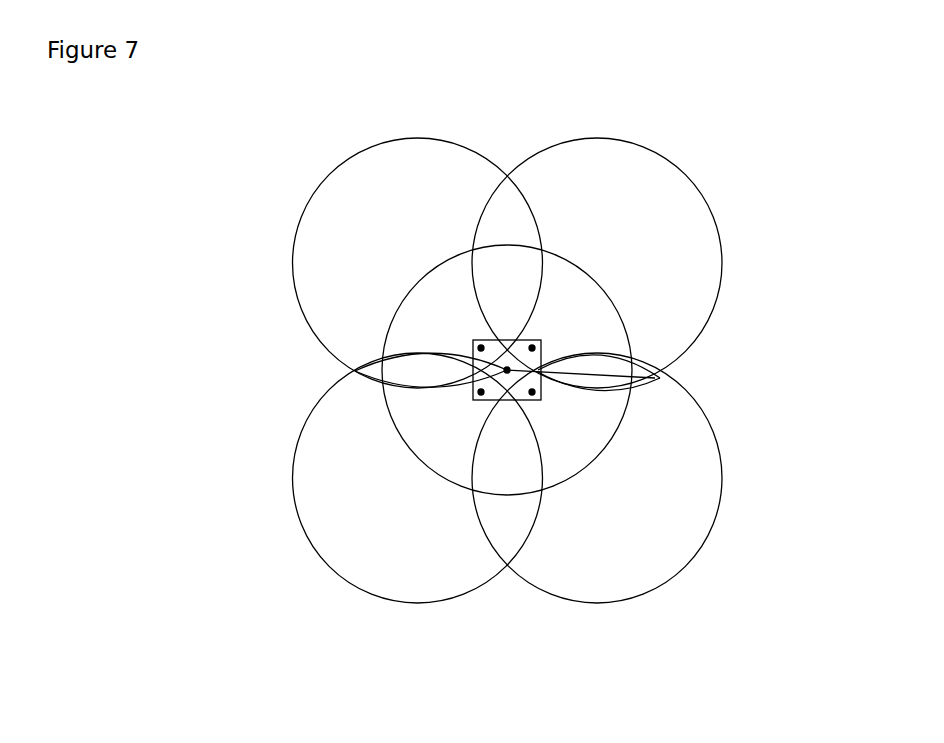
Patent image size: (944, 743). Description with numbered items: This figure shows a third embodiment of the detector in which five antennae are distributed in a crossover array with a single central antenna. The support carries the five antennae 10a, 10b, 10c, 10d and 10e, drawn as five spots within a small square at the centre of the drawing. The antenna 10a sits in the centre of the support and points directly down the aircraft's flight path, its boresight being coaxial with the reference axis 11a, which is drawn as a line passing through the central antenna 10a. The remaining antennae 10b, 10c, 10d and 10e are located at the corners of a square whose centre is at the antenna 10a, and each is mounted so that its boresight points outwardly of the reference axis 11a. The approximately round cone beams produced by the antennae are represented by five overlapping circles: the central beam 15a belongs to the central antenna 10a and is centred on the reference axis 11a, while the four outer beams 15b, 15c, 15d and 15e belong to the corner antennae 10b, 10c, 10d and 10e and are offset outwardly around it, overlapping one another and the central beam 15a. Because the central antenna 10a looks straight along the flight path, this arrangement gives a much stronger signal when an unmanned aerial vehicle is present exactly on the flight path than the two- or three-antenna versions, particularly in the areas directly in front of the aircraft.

The antenna 10a is at (503, 368).
The antenna 10b is at (479, 345).
The antenna 10c is at (534, 346).
The antenna 10d is at (534, 394).
The antenna 10e is at (475, 394).
The reference axis 11a is at (655, 378).
The antenna beam 15a is at (392, 323).
The antenna beam 15b is at (432, 182).
The antenna beam 15c is at (613, 182).
The antenna beam 15d is at (612, 589).
The antenna beam 15e is at (433, 589).